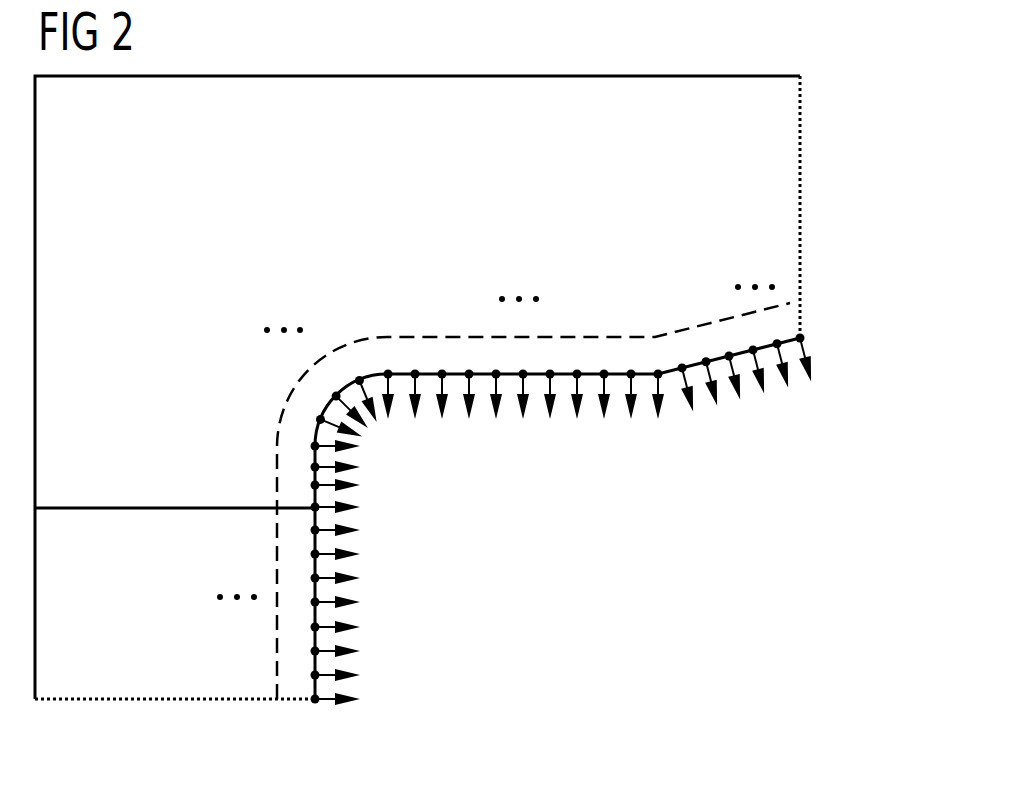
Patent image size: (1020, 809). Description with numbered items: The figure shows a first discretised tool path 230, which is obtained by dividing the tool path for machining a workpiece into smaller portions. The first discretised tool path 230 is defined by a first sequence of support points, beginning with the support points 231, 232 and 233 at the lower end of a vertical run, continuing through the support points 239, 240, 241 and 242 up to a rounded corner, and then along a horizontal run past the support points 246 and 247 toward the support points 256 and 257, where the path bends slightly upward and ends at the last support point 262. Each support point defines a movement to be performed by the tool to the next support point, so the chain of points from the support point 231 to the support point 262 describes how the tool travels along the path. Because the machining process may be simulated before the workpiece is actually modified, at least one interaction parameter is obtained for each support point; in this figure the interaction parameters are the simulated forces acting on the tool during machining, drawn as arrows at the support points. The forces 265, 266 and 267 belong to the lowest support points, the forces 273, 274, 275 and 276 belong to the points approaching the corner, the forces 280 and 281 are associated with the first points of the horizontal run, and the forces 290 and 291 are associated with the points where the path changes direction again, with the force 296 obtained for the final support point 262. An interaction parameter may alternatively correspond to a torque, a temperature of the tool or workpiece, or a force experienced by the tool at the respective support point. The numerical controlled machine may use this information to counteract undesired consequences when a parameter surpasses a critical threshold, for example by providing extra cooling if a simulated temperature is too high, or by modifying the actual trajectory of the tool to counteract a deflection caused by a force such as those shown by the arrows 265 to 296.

The first discretised tool path 230 is at (535, 380).
The support point 231 is at (312, 700).
The support point 232 is at (312, 675).
The support point 233 is at (312, 651).
The support point 239 is at (312, 507).
The support point 240 is at (312, 485).
The support point 241 is at (312, 467).
The support point 242 is at (312, 446).
The support point 246 is at (388, 372).
The support point 247 is at (416, 372).
The support point 256 is at (658, 372).
The support point 257 is at (683, 366).
The support point 262 is at (812, 338).
The interaction parameter 265 is at (325, 703).
The interaction parameter 266 is at (330, 678).
The interaction parameter 267 is at (330, 653).
The interaction parameter 273 is at (330, 513).
The interaction parameter 274 is at (330, 489).
The interaction parameter 275 is at (330, 470).
The interaction parameter 276 is at (332, 452).
The interaction parameter 280 is at (393, 388).
The interaction parameter 281 is at (418, 388).
The interaction parameter 290 is at (657, 385).
The interaction parameter 291 is at (687, 377).
The interaction parameter 296 is at (808, 349).